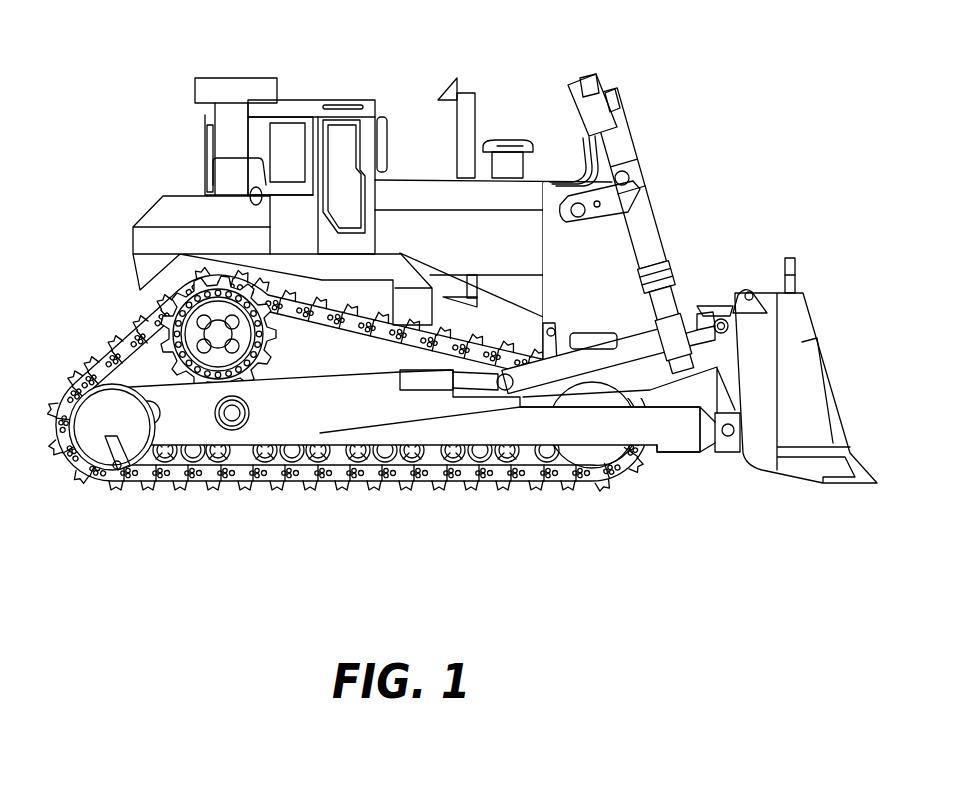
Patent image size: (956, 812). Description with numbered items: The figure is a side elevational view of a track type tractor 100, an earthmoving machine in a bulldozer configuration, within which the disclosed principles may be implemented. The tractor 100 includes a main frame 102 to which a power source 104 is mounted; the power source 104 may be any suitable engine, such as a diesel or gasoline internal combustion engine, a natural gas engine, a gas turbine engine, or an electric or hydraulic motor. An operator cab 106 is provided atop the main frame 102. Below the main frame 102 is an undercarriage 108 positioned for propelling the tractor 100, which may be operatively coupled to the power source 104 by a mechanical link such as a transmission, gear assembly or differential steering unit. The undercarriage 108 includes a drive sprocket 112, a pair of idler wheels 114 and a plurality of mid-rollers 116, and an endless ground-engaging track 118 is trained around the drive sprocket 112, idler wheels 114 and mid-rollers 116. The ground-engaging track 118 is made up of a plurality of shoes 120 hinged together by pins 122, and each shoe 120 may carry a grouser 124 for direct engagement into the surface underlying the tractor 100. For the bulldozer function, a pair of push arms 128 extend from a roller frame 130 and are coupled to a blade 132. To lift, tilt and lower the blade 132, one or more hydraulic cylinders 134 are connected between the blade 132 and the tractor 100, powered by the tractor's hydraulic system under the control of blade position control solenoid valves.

The track type tractor 100 is at (632, 80).
The main frame 102 is at (605, 299).
The power source 104 is at (487, 260).
The operator cab 106 is at (317, 116).
The undercarriage 108 is at (322, 507).
The drive sprocket 112 is at (178, 355).
The idler wheels 114 is at (108, 453).
The mid-rollers 116 is at (218, 472).
The ground-engaging track 118 is at (490, 486).
The shoes 120 is at (130, 338).
The pins 122 is at (140, 323).
The grouser 124 is at (72, 393).
The push arms 128 is at (635, 440).
The roller frame 130 is at (383, 390).
The blade 132 is at (832, 383).
The hydraulic cylinders 134 is at (637, 147).